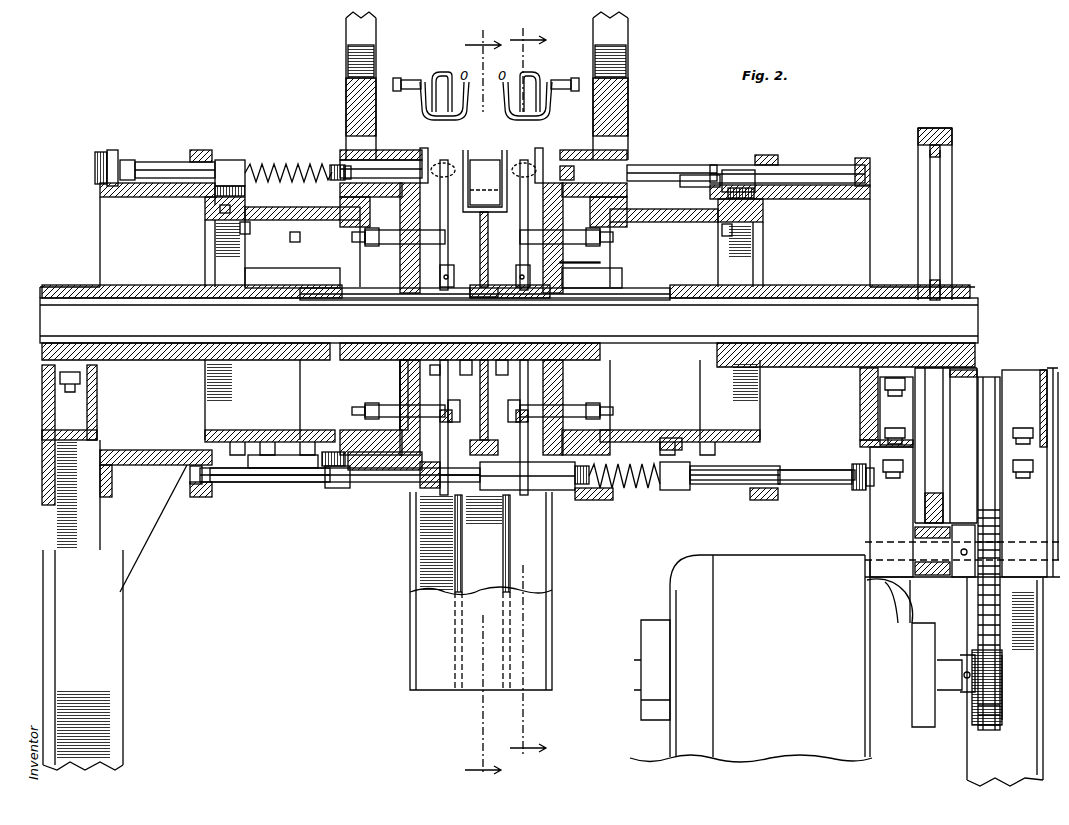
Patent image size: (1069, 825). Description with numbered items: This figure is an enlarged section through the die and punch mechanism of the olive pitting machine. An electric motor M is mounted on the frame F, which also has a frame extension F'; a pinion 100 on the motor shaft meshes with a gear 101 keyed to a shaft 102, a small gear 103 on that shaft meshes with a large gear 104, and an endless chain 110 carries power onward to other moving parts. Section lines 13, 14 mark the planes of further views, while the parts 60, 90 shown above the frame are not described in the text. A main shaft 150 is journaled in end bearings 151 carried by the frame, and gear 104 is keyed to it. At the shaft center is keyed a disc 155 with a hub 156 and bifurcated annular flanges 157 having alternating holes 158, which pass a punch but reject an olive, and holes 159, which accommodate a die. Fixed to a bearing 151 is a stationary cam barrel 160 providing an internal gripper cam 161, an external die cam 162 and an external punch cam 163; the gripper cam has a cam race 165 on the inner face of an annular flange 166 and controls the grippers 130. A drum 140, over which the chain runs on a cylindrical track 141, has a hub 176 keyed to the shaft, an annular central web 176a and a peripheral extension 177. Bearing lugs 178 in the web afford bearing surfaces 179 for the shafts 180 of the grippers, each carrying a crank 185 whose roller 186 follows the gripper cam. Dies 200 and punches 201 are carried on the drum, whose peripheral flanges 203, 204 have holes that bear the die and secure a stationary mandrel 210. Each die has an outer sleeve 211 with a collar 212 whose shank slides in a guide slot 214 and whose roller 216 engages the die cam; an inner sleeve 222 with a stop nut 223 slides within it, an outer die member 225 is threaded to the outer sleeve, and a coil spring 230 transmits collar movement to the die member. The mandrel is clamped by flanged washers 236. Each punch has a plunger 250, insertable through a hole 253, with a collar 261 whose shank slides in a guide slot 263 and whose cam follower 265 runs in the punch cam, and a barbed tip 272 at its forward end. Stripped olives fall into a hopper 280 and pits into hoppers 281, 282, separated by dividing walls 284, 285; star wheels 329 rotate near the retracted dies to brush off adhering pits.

The frame F is at (465, 86).
The frame extension F' is at (115, 617).
The electric motor M is at (802, 658).
The section line 13- 13 is at (531, 399).
The section line 14- 14 is at (486, 414).
The clamp 60 is at (415, 107).
The hook 90 is at (452, 75).
The endless chain 110 is at (403, 78).
The pinion 100 is at (1003, 705).
The gear 101 is at (969, 630).
The shaft 102 is at (940, 577).
The small gear 103 is at (905, 595).
The large gear 104 is at (954, 128).
The grippers 130 is at (444, 160).
The drum 140 is at (92, 261).
The cylindrical track 141 is at (405, 150).
The main shaft 150 is at (44, 312).
The end bearings 151 is at (160, 286).
The disc 155 is at (490, 386).
The hub 156 is at (490, 350).
The bifurcated annular flanges 157 is at (484, 212).
The holes 158 is at (508, 165).
The holes 159 is at (486, 182).
The cam barrel 160 is at (197, 241).
The internal gripper cam 161 is at (362, 244).
The external die cam 162 is at (212, 206).
The external punch cam 163 is at (246, 234).
The cam race 165 is at (624, 279).
The annular flange 166 is at (297, 242).
The hub 176 is at (336, 286).
The annular central web 176a is at (404, 432).
The peripheral extension 177 is at (115, 197).
The bearing lugs 178 is at (395, 402).
The bearing surfaces 179 is at (405, 410).
The shafts 180 is at (362, 412).
The crank 185 is at (602, 410).
The roller 186 is at (620, 418).
The dies 200 is at (457, 325).
The punches 201 is at (657, 162).
The peripheral flange 203 is at (205, 150).
The peripheral flange 204 is at (112, 150).
The stationary mandrel 210 is at (818, 481).
The outer sleeve 211 is at (172, 162).
The collar 212 is at (232, 160).
The longitudinal guide slot 214 is at (732, 478).
The roller 216 is at (224, 214).
The inner sleeve 222 is at (315, 165).
The stop nut 223 is at (128, 160).
The outer die member 225 is at (336, 166).
The coil spring 230 is at (280, 165).
The flanged washers 236 is at (96, 167).
The plunger 250 is at (262, 482).
The hole 253 is at (110, 464).
The collar 261 is at (338, 488).
The guide slot 263 is at (290, 468).
The roller or cam follower 265 is at (330, 466).
The tip 272 is at (610, 161).
The hopper 280 is at (481, 591).
The hopper 281 is at (441, 592).
The hopper 282 is at (523, 592).
The dividing wall 284 is at (460, 540).
The dividing wall 285 is at (508, 545).
The star wheels 329 is at (600, 263).